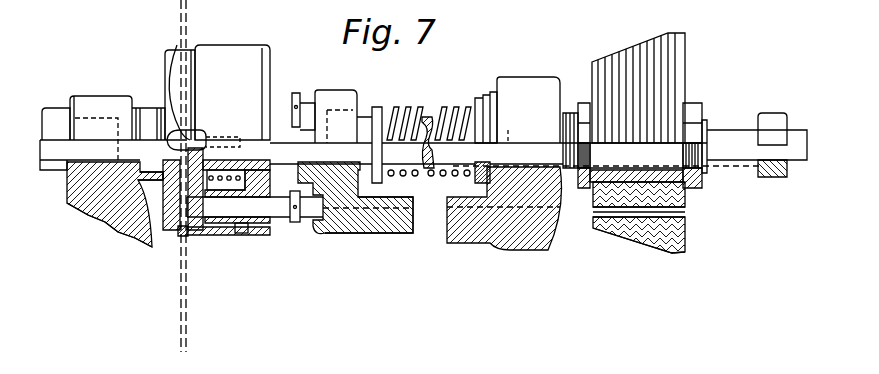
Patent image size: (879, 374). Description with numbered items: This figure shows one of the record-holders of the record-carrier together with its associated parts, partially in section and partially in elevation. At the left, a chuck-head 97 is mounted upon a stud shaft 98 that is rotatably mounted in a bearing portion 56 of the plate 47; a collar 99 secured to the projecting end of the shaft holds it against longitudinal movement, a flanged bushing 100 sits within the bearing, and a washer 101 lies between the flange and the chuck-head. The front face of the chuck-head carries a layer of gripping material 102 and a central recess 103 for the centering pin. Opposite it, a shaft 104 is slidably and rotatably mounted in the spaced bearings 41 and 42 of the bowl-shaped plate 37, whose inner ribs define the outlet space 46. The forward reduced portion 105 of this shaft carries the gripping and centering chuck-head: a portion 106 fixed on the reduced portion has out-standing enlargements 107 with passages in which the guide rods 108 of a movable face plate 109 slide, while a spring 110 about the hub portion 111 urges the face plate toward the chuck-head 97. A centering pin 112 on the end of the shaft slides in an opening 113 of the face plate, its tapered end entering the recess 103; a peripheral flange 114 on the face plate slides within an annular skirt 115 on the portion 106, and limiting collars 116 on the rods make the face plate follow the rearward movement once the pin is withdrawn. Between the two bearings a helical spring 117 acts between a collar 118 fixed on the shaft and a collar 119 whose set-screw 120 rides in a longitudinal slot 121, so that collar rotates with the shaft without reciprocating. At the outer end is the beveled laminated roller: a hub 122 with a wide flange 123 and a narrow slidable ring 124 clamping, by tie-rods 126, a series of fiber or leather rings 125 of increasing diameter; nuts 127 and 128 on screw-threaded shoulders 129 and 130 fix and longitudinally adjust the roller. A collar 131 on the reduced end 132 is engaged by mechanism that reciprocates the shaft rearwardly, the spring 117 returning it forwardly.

The bowl-shaped plate 37 is at (333, 238).
The bearing 41 is at (542, 66).
The bearing 42 is at (337, 107).
The outlet space 46 is at (335, 228).
The plate 47 is at (125, 237).
The bearing portion 56 is at (112, 97).
The chuck-head 97 is at (166, 72).
The stud shaft 98 is at (105, 148).
The collar 99 is at (55, 109).
The flanged bushing 100 is at (72, 193).
The washer 101 is at (140, 180).
The layer of gripping material 102 is at (180, 233).
The recess 103 is at (157, 108).
The shaft 104 is at (433, 191).
The reduced portion 105 is at (250, 147).
The portion 106 is at (262, 187).
The out-standing enlargement 107 is at (240, 232).
The guide rod 108 is at (284, 216).
The movable face plate 109 is at (185, 235).
The spring 110 is at (218, 176).
The hub portion 111 is at (255, 160).
The centering pin 112 is at (190, 137).
The opening 113 is at (178, 50).
The peripheral flange 114 is at (215, 236).
The annular skirt 115 is at (232, 234).
The limiting collar 116 is at (297, 100).
The helical spring 117 is at (447, 107).
The collar 118 is at (377, 107).
The collar 119 is at (485, 98).
The set-screw 120 is at (487, 162).
The longitudinal slot 121 is at (527, 170).
The sleeve or hub portion 122 is at (638, 158).
The flange 123 is at (686, 193).
The slidable ring 124 is at (593, 224).
The rings 125 is at (644, 243).
The tie-rod 126 is at (686, 222).
The nut 127 is at (583, 178).
The nut 128 is at (702, 177).
The screw-threaded shoulder 129 is at (568, 114).
The screw-threaded shoulder 130 is at (706, 155).
The collar 131 is at (772, 120).
The reduced end 132 is at (742, 131).